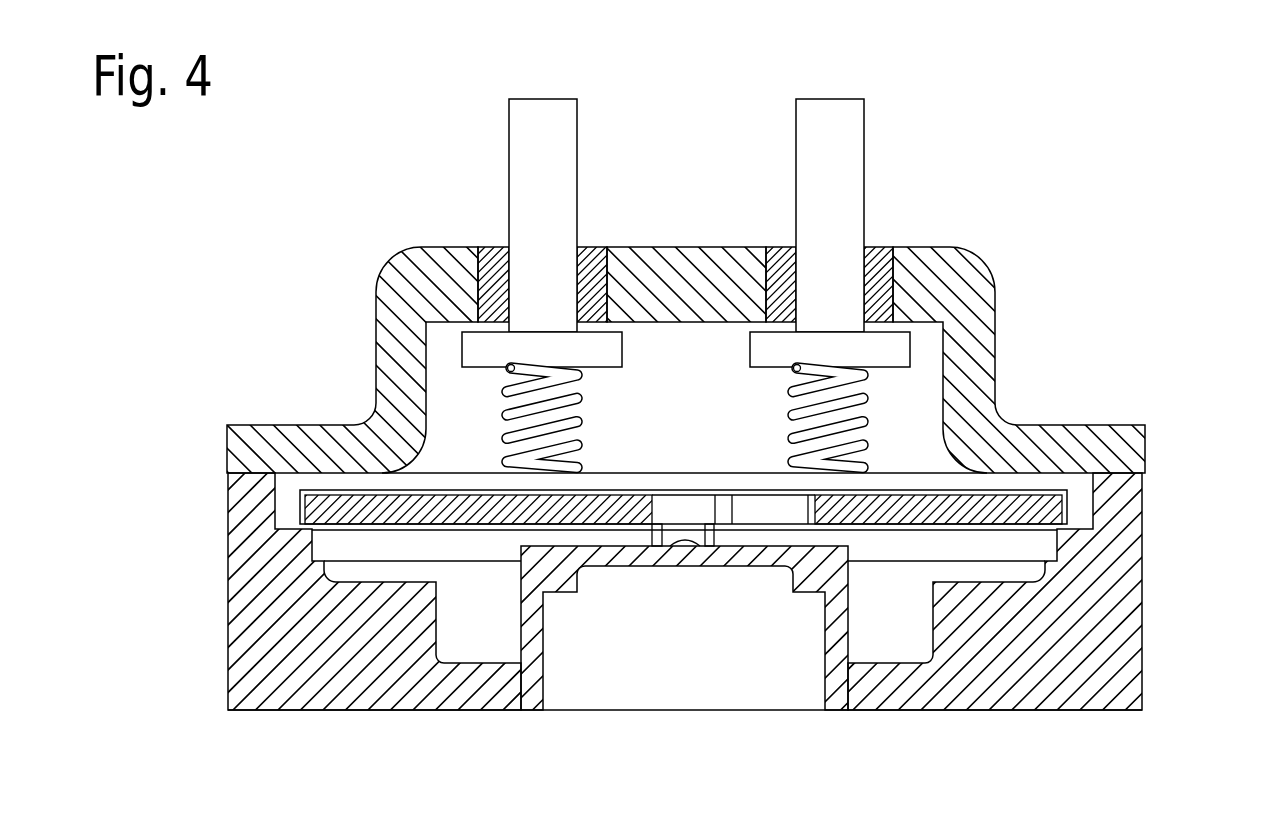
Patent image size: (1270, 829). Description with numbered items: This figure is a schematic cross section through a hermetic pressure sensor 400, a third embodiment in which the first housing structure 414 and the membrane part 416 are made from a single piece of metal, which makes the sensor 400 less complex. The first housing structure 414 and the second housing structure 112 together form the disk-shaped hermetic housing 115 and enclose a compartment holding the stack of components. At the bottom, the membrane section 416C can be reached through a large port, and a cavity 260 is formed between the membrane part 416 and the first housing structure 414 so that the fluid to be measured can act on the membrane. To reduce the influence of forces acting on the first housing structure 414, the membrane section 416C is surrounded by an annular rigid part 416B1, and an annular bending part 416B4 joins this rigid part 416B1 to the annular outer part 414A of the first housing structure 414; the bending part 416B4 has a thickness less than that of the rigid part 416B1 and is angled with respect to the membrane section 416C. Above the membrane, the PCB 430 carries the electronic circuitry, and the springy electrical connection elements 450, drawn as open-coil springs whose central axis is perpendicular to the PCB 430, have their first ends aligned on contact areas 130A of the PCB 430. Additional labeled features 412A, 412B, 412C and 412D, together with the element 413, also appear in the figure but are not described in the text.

The hermetic pressure sensor 400 is at (670, 138).
The cap body 412A is at (400, 340).
The terminal pin 412B is at (533, 175).
The insulating sleeve 412C is at (595, 255).
The seal 412D is at (886, 278).
The lead wire 413 is at (680, 544).
The second housing structure 112 is at (973, 298).
The springy electrical connection elements 450 is at (862, 410).
The contact areas 130A is at (900, 490).
The PCB 430 is at (1070, 500).
The first housing structure 414 is at (1127, 607).
The annular outer part 414A is at (252, 503).
The hermetic housing 115 is at (248, 613).
The membrane part 416 is at (845, 637).
The annular rigid part 416B1 is at (555, 577).
The annular bending part 416B4 is at (530, 622).
The membrane section 416C is at (713, 566).
The cavity 260 is at (800, 682).